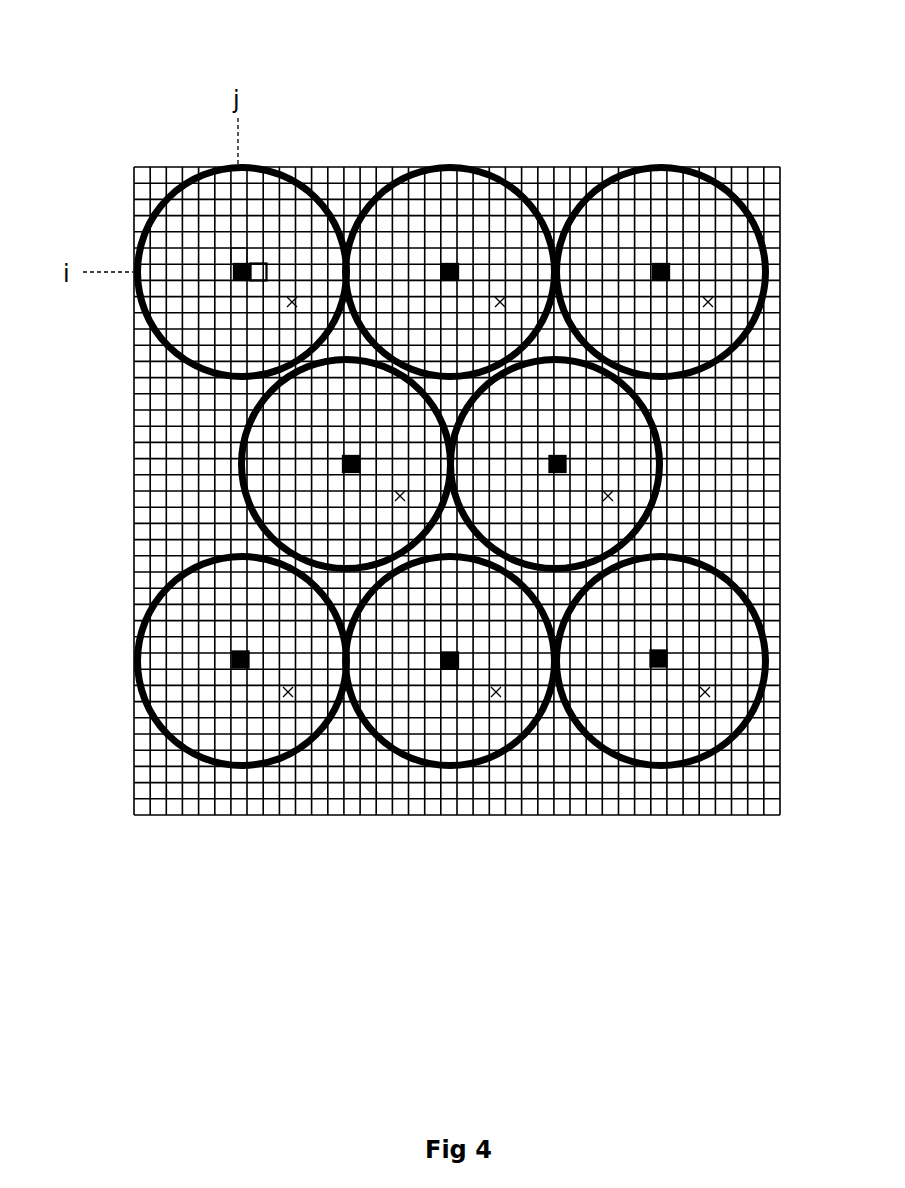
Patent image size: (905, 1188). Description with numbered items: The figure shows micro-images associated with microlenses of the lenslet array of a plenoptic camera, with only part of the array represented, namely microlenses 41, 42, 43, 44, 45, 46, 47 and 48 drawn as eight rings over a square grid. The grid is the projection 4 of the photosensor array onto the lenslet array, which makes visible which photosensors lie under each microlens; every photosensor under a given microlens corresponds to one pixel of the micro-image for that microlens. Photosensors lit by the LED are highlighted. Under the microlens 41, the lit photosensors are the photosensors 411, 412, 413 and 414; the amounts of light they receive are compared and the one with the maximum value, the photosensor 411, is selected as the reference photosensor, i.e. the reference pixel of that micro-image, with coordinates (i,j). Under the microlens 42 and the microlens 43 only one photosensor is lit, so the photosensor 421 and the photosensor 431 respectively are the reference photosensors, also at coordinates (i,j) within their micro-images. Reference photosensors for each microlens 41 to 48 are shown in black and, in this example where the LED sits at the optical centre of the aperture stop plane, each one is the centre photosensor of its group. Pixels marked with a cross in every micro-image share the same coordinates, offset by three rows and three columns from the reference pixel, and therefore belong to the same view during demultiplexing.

The projection of the photosensor array 4 is at (746, 163).
The microlens 41 is at (183, 183).
The photosensor 411 is at (232, 272).
The photosensor 412 is at (237, 253).
The photosensor 413 is at (260, 262).
The photosensor 414 is at (263, 262).
The microlens 42 is at (437, 166).
The photosensor 421 is at (445, 262).
The microlens 43 is at (617, 170).
The photosensor 431 is at (660, 262).
The microlens 44 is at (237, 452).
The microlens 45 is at (663, 445).
The microlens 46 is at (155, 738).
The microlens 47 is at (437, 768).
The microlens 48 is at (670, 773).